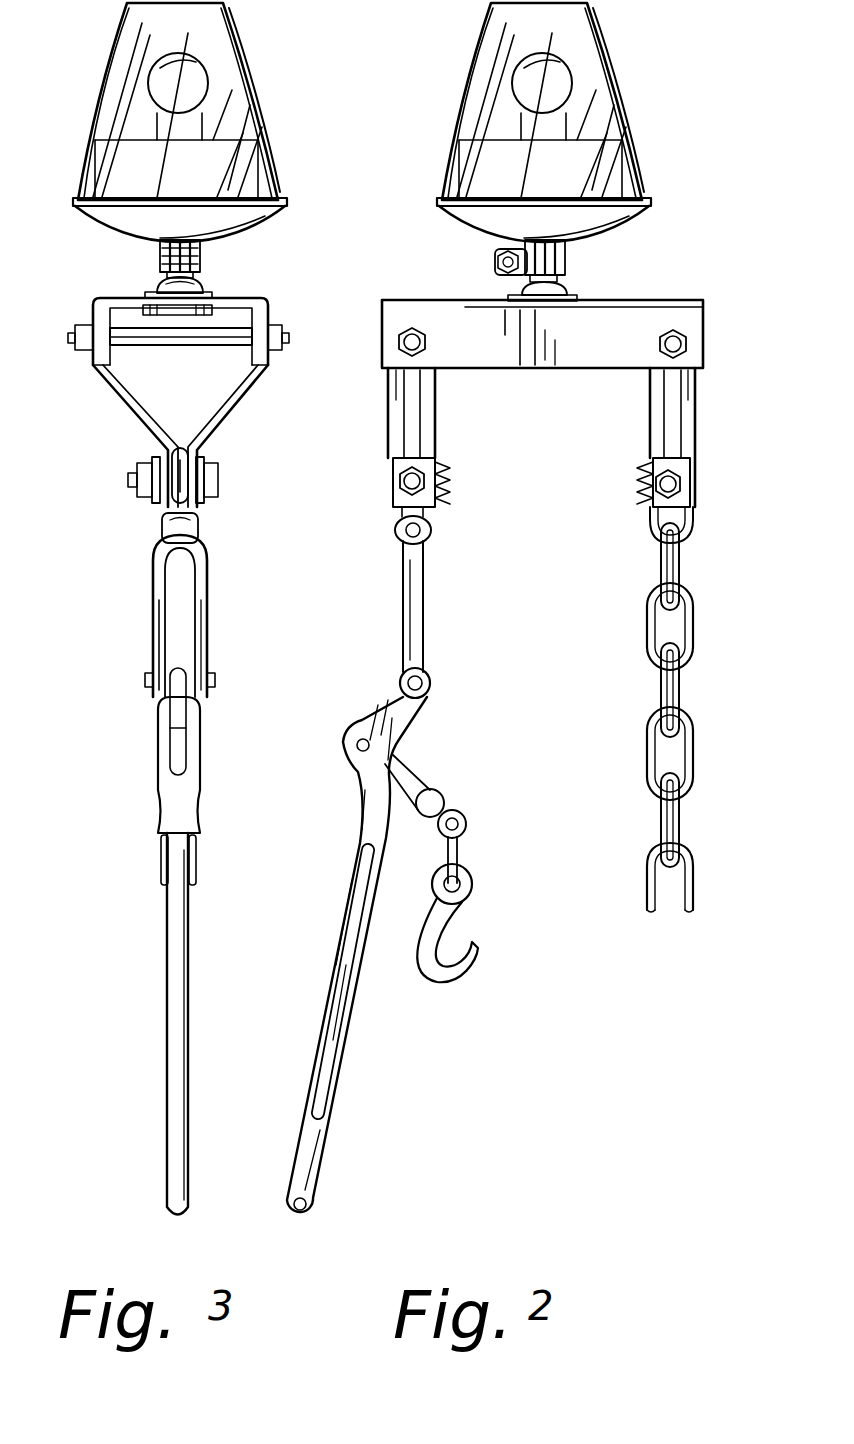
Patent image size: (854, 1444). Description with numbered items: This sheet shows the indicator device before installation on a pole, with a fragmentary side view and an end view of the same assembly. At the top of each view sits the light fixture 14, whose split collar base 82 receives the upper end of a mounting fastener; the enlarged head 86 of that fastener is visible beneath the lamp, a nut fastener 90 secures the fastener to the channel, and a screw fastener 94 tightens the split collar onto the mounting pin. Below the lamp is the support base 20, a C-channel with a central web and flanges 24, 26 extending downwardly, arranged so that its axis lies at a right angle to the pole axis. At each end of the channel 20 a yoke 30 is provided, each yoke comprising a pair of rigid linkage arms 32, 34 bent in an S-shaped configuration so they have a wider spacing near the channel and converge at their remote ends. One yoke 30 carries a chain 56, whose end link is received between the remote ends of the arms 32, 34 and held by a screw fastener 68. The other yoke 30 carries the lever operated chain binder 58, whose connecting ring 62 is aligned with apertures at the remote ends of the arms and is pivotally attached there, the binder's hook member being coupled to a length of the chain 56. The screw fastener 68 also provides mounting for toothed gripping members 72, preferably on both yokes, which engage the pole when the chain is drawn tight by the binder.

In FIG. 3, the light fixture 14 is at (270, 82).
In FIG. 2, the light fixture 14 is at (640, 120).
In FIG. 3, the support base 20 is at (240, 300).
In FIG. 2, the support base 20 is at (445, 312).
In FIG. 3, the flange 24 is at (266, 322).
In FIG. 3, the flange 26 is at (90, 310).
In FIG. 3, the yoke 30 is at (170, 430).
In FIG. 2, the yoke 30 is at (559, 437).
In FIG. 3, the linkage arm 32 is at (125, 385).
In FIG. 2, the linkage arm 32 is at (658, 400).
In FIG. 3, the linkage arm 34 is at (238, 402).
In FIG. 2, the linkage arm 34 is at (388, 387).
In FIG. 2, the chain 56 is at (690, 590).
In FIG. 3, the chain binder 58 is at (216, 608).
In FIG. 3, the connecting ring 62 is at (175, 480).
In FIG. 2, the screw fastener 68 is at (672, 484).
In FIG. 2, the gripping member 72 is at (440, 500).
In FIG. 3, the split collar base 82 is at (205, 258).
In FIG. 2, the split collar base 82 is at (562, 258).
In FIG. 3, the enlarged head 86 is at (208, 318).
In FIG. 3, the nut fastener 90 is at (152, 290).
In FIG. 2, the screw fastener 94 is at (495, 262).